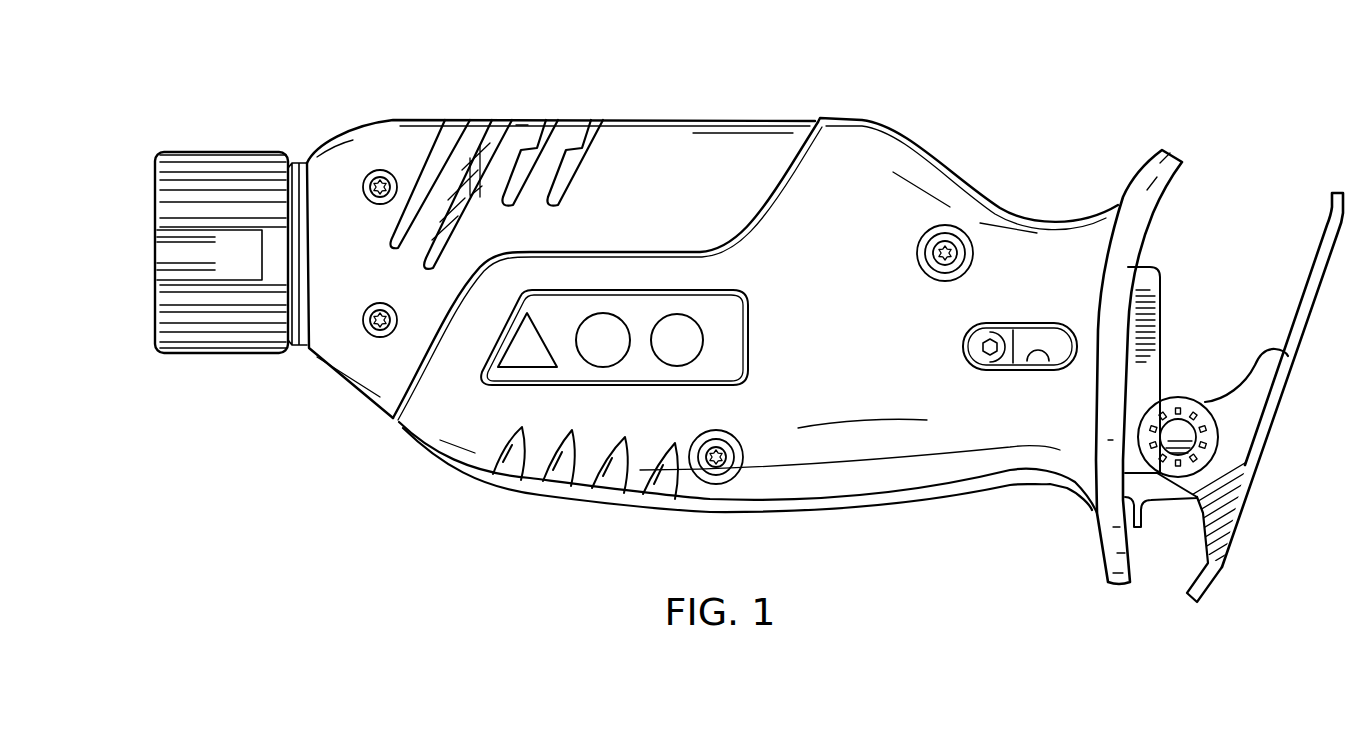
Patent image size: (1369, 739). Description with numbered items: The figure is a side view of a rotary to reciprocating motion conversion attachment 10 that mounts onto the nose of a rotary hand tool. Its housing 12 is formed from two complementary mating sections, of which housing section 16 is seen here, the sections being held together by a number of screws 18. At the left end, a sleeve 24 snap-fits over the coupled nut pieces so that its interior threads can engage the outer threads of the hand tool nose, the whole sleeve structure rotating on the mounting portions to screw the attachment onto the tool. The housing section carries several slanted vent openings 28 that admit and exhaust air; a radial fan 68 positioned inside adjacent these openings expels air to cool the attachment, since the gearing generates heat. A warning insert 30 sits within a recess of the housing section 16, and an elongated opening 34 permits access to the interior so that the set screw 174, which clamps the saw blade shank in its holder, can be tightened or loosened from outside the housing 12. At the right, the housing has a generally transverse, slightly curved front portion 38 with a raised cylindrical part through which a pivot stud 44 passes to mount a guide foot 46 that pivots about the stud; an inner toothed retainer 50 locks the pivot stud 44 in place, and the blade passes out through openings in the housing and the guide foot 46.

The attachment 10 is at (898, 40).
The housing 12 is at (694, 112).
The housing section 16 is at (834, 478).
The screws 18 is at (374, 320).
The sleeve 24 is at (222, 176).
The vent openings 28 is at (567, 160).
The warning insert 30 is at (571, 368).
The elongated opening 34 is at (1031, 355).
The front portion 38 is at (1137, 216).
The pivot stud 44 is at (1181, 437).
The guide foot 46 is at (1289, 377).
The inner toothed retainer 50 is at (1213, 443).
The fan blade 68 is at (728, 458).
The set screw 174 is at (1000, 337).